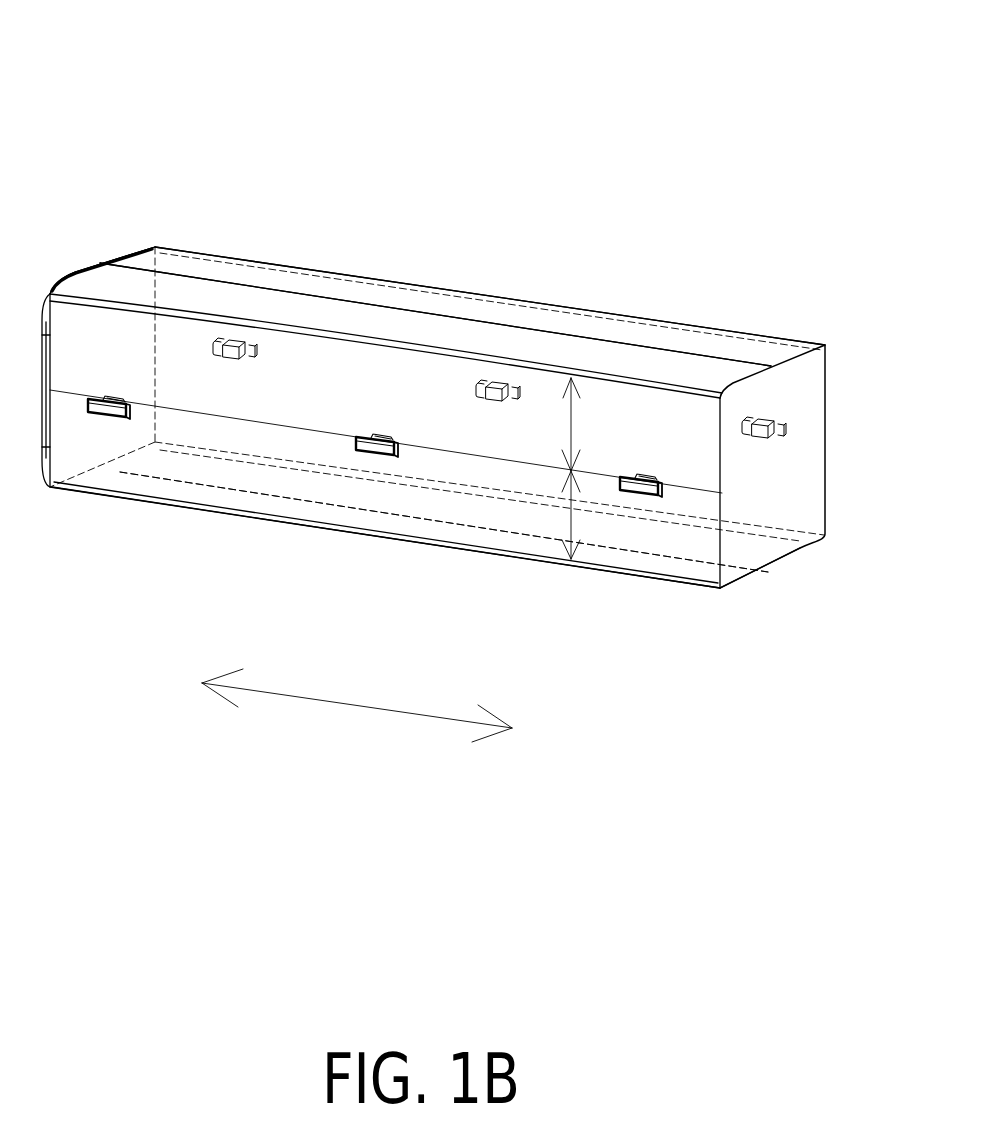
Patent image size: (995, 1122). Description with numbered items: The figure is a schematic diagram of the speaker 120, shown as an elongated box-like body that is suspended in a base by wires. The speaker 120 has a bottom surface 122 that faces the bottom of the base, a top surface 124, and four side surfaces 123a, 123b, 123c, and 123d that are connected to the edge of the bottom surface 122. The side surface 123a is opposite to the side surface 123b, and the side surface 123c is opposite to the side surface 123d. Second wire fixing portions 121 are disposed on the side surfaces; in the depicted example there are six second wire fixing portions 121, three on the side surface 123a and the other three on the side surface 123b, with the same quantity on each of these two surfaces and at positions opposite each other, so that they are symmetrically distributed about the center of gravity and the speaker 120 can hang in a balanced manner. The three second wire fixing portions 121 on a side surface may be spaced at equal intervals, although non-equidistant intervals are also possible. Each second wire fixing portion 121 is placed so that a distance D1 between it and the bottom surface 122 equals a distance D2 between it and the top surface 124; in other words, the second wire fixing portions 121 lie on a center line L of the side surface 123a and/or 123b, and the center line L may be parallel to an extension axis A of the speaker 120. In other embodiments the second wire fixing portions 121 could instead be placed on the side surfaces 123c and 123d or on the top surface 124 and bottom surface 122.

The speaker 120 is at (80, 39).
The second wire fixing portion 121 is at (230, 340).
The bottom surface 122 is at (468, 554).
The side surface 123a is at (243, 478).
The side surface 123b is at (705, 328).
The side surface 123c is at (781, 548).
The side surface 123d is at (145, 249).
The top surface 124 is at (358, 321).
The center line L is at (707, 491).
The distance D1 is at (571, 523).
The distance D2 is at (571, 424).
The extension axis A is at (357, 721).